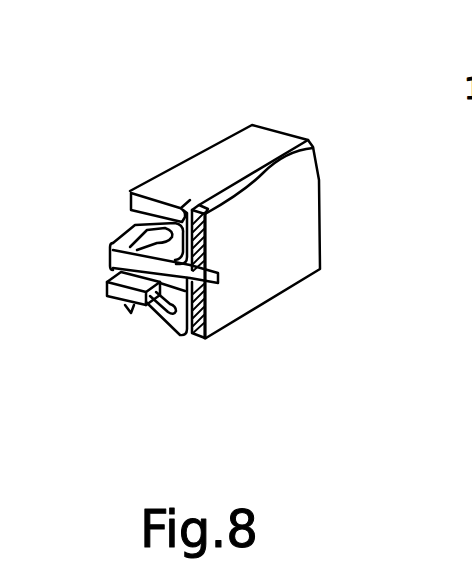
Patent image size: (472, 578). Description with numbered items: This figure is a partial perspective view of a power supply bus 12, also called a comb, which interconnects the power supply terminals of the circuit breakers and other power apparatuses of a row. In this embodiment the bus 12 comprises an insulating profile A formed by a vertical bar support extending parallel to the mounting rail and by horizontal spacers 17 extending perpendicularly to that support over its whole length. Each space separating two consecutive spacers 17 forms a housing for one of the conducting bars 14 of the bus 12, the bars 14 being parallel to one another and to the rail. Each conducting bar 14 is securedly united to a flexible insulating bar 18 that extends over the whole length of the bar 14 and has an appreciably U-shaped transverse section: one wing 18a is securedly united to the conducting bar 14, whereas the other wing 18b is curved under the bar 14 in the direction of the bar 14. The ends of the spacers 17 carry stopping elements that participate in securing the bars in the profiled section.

The power supply bus 12 is at (179, 112).
The conducting bar 14 is at (157, 202).
The horizontal spacer 17 is at (120, 247).
The flexible insulating bar 18 is at (178, 337).
The wing 18a is at (206, 274).
The wing 18b is at (153, 320).
The insulating profile A is at (272, 202).